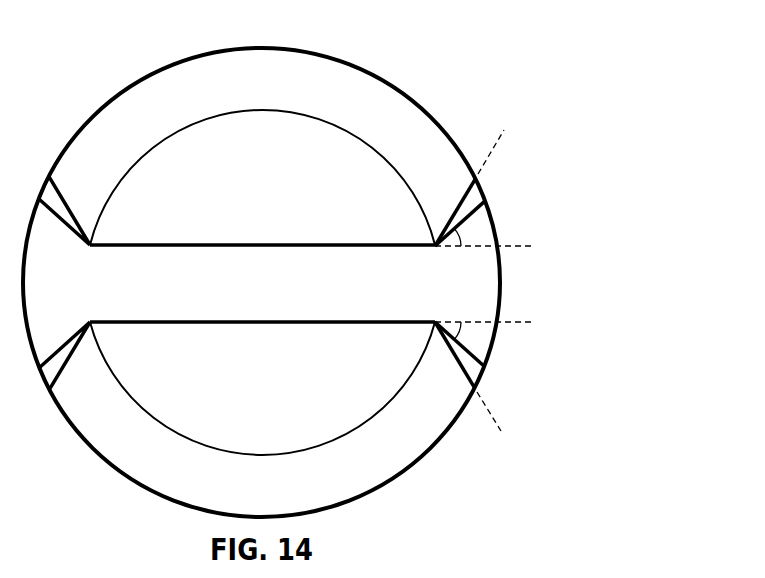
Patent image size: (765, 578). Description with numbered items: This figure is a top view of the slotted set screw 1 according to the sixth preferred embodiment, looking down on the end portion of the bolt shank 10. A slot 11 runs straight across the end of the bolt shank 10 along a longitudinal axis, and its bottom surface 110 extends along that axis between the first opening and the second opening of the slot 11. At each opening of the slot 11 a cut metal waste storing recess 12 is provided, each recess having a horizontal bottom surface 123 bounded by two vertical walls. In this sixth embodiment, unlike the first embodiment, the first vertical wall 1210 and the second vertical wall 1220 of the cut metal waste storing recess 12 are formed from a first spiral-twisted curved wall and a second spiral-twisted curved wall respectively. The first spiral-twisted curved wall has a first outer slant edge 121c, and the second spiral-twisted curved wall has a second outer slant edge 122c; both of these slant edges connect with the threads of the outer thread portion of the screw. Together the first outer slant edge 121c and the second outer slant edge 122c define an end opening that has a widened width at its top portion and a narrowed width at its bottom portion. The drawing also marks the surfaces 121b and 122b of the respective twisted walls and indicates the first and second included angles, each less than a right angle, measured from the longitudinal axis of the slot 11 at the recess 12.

The slotted set screw 1 is at (432, 82).
The bolt shank 10 is at (333, 85).
The slot 11 is at (262, 282).
The bottom surface 110 is at (176, 254).
The cut metal waste storing recess 12 is at (495, 290).
The horizontal bottom surface 123 is at (480, 286).
The second vertical wall 1220 is at (520, 177).
The second inclined surface 122b is at (484, 214).
The second outer slant edge 122c is at (480, 179).
The first vertical wall 1210 is at (499, 371).
The first inclined surface 121b is at (484, 352).
The first outer slant edge 121c is at (488, 378).